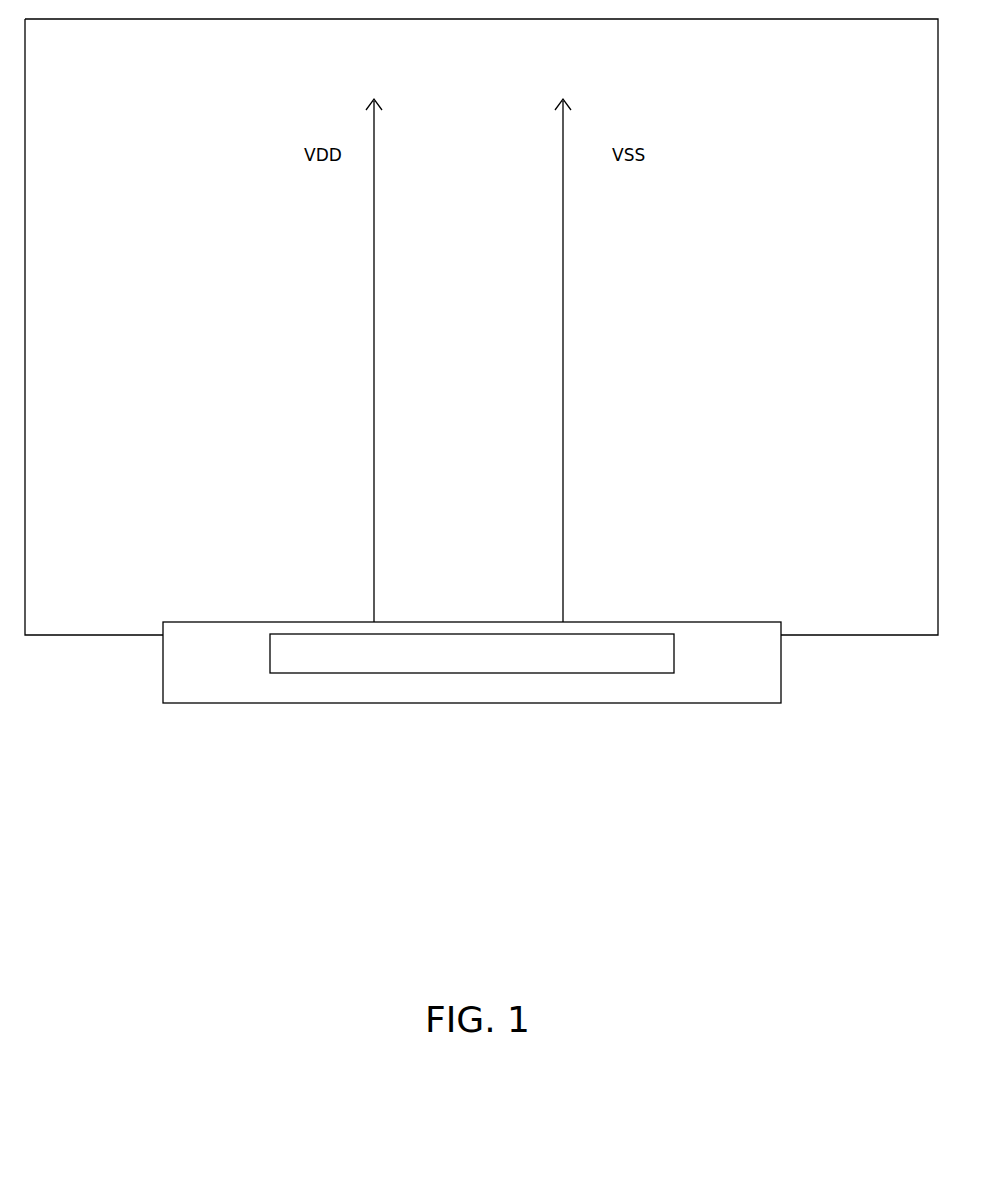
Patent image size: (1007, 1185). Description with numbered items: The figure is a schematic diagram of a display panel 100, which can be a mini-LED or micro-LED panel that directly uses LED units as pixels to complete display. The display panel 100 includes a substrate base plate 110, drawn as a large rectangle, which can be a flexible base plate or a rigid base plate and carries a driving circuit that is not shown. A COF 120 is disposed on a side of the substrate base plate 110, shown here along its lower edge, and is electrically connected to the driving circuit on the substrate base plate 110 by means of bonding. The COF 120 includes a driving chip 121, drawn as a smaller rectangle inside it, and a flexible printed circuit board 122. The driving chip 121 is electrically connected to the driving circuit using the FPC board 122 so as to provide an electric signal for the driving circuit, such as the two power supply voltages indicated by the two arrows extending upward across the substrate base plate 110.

The display panel 100 is at (486, 955).
The substrate base plate 110 is at (878, 608).
The COF 120 is at (781, 703).
The driving chip 121 is at (438, 662).
The flexible printed circuit (FPC) board 122 is at (213, 689).